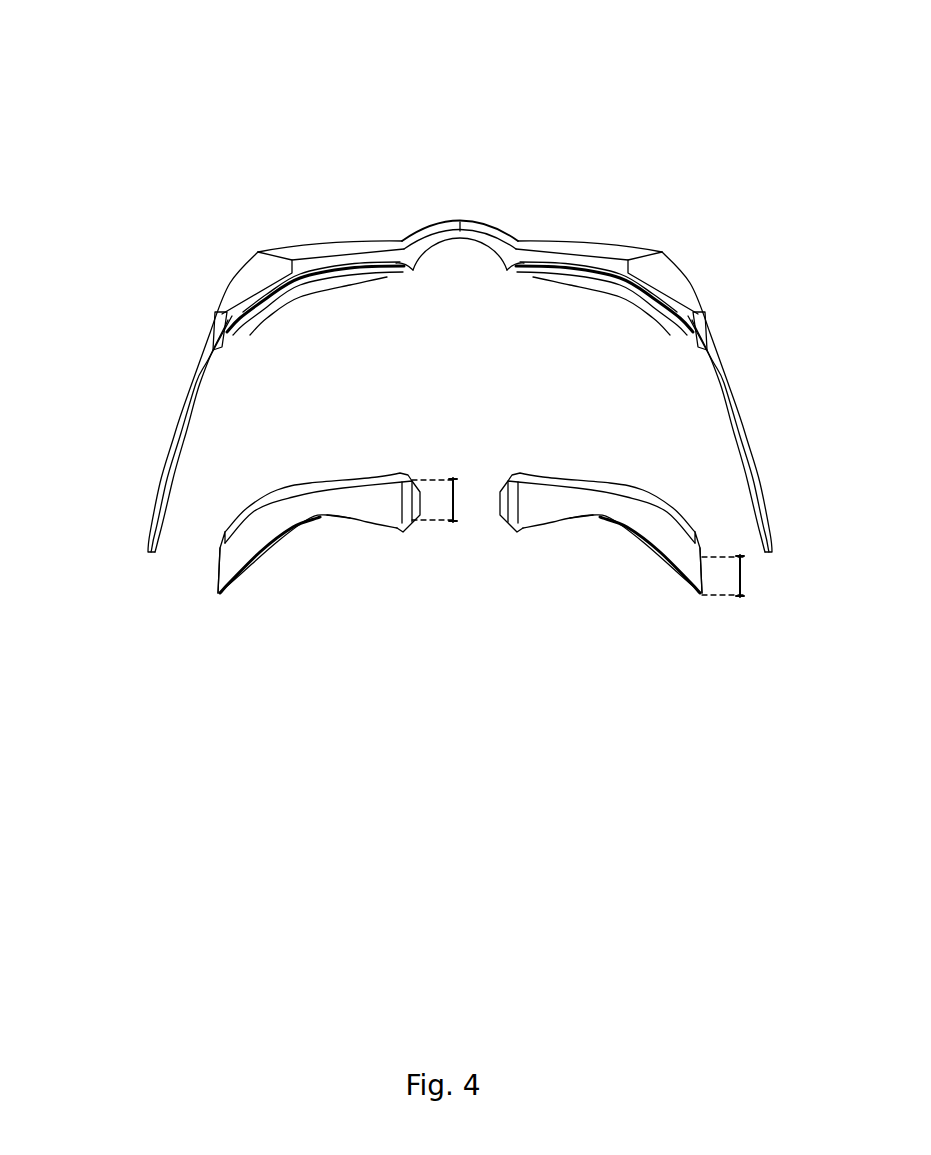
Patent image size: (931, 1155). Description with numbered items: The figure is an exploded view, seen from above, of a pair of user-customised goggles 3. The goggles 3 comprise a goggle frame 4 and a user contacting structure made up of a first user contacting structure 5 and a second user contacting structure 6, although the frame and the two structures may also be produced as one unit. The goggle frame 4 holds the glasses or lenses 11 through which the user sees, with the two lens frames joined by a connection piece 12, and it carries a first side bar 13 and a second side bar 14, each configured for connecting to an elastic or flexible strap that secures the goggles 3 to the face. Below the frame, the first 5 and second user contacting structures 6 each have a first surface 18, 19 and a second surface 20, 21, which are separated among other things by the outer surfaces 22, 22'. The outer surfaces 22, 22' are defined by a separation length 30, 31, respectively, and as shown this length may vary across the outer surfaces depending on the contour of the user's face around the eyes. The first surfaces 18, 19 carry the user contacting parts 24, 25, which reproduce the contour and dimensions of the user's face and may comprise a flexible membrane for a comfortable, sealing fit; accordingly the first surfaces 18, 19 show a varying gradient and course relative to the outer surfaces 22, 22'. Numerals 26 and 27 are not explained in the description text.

The user-customised goggles 3 is at (292, 78).
The goggle frame 4 is at (192, 360).
The first user contacting structure 5 is at (217, 563).
The second user contacting structure 6 is at (664, 562).
The glasses or lenses 11 is at (317, 238).
The connection piece 12 is at (450, 230).
The first side bar 13 is at (163, 450).
The second side bar 14 is at (745, 405).
The first surface 18 is at (363, 527).
The first surface 19 is at (548, 523).
The second surface 20 is at (302, 497).
The second surface 21 is at (582, 483).
The outer surface 22 is at (135, 607).
The outer surface 22' is at (646, 563).
The user contacting part 24 is at (407, 533).
The user contacting part 25 is at (517, 523).
The left nose pad body 26 is at (253, 513).
The right nose pad body 27 is at (523, 467).
The separation length 30 is at (452, 500).
The separation length 31 is at (743, 576).